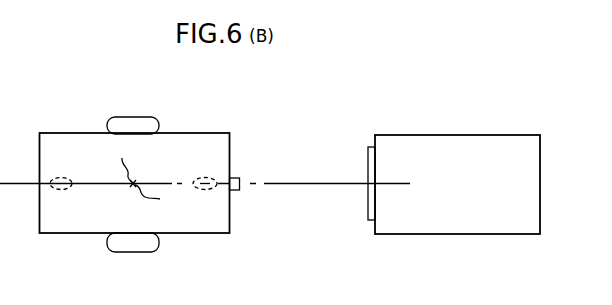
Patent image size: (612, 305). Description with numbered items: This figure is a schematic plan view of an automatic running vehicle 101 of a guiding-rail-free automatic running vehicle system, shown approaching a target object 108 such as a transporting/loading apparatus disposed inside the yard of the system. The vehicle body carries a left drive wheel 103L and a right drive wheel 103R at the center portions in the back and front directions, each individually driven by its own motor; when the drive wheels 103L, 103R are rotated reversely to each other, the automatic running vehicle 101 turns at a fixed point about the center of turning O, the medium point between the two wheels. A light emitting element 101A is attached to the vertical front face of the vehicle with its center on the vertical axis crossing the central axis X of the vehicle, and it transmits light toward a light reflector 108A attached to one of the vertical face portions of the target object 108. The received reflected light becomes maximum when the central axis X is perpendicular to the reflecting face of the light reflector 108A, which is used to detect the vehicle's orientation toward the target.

The automatic running vehicle 101 is at (68, 133).
The light emitting element 101A is at (240, 179).
The left drive wheel 103L is at (138, 117).
The right drive wheel 103R is at (134, 252).
The target object 108 is at (479, 135).
The light reflector 108A is at (368, 207).